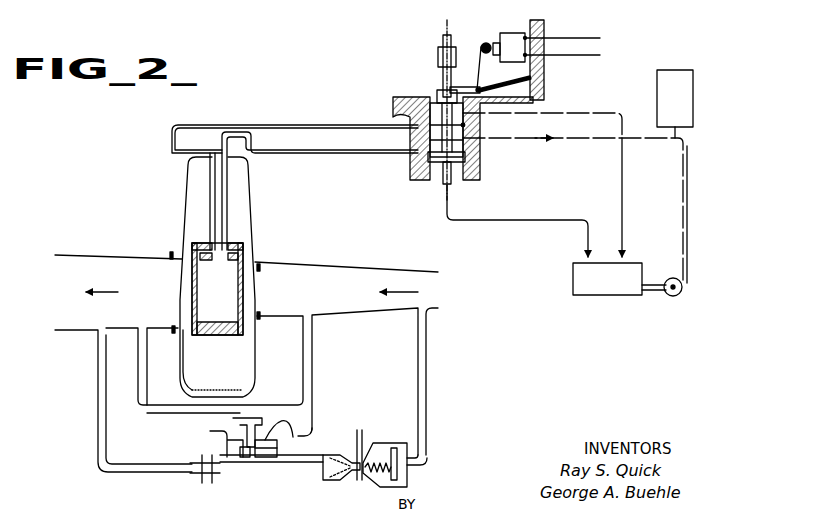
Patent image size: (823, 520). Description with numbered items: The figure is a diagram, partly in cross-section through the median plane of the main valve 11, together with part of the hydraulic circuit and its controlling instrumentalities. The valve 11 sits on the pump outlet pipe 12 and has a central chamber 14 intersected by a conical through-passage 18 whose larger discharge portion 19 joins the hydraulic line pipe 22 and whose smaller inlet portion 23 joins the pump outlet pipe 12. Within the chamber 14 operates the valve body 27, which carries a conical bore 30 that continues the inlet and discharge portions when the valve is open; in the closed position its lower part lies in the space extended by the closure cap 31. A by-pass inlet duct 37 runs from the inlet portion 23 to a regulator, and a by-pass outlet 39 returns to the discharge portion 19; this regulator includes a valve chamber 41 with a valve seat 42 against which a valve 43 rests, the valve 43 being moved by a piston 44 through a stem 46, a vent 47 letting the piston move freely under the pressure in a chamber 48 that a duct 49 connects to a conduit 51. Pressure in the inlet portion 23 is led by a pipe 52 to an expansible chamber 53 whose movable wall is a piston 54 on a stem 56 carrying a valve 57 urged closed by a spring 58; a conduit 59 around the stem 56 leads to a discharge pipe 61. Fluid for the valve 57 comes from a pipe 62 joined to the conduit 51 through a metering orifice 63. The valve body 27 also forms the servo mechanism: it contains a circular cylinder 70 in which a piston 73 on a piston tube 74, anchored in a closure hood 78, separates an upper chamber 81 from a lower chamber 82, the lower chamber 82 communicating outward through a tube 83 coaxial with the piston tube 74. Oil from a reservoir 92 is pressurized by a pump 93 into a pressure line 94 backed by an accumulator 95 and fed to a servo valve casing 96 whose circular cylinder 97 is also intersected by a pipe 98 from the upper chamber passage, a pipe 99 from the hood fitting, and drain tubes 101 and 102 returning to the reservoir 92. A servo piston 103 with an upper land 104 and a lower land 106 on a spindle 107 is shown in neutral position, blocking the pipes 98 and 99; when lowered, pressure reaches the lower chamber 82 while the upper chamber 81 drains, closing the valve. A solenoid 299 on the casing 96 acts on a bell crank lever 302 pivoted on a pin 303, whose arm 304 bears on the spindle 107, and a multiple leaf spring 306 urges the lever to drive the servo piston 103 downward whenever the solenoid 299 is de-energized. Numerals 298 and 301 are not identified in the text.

The valve 11 is at (257, 212).
The pump outlet pipe 12 is at (352, 266).
The central chamber 14 is at (252, 341).
The conical through-passage 18 is at (258, 312).
The discharge portion 19 is at (174, 260).
The hydraulic line pipe 22 is at (66, 255).
The inlet portion 23 is at (256, 270).
The valve body 27 is at (190, 291).
The conical bore 30 is at (218, 331).
The closure cap 31 is at (182, 380).
The by-pass inlet duct 37 is at (313, 343).
The by-pass outlet 39 is at (140, 354).
The valve chamber 41 is at (282, 463).
The valve seat 42 is at (304, 426).
The valve 43 is at (296, 438).
The piston 44 is at (238, 424).
The stem 46 is at (282, 415).
The vent 47 is at (265, 458).
The chamber 48 is at (245, 458).
The duct 49 is at (226, 440).
The conduit 51 is at (308, 463).
The pipe 52 is at (427, 353).
The expansible chamber 53 is at (420, 484).
The piston 54 is at (404, 443).
The stem 56 is at (372, 486).
The valve 57 is at (337, 480).
The spring 58 is at (392, 447).
The conduit 59 is at (358, 480).
The discharge pipe 61 is at (359, 455).
The pipe 62 is at (97, 379).
The metering orifice 63 is at (194, 476).
The circular cylinder 70 is at (198, 309).
The piston 73 is at (243, 252).
The piston tube 74 is at (210, 197).
The closure hood 78 is at (184, 170).
The upper chamber 81 is at (233, 250).
The lower chamber 82 is at (226, 295).
The tube 83 is at (217, 182).
The reservoir 92 is at (634, 268).
The pump 93 is at (677, 297).
The pressure line 94 is at (597, 140).
The accumulator 95 is at (674, 70).
The servo valve casing 96 is at (482, 160).
The circular cylinder 97 is at (412, 100).
The pipe 98 is at (324, 126).
The pipe 99 is at (338, 153).
The drain tube 101 is at (594, 113).
The drain tube 102 is at (536, 220).
The servo piston 103 is at (436, 96).
The upper land 104 is at (466, 125).
The lower land 106 is at (414, 162).
The spindle 107 is at (443, 40).
The wire 298 is at (585, 37).
The solenoid 299 is at (512, 33).
The wire 301 is at (598, 53).
The bell crank lever 302 is at (484, 43).
The pin 303 is at (479, 68).
The arm 304 is at (465, 87).
The multiple leaf spring 306 is at (526, 80).